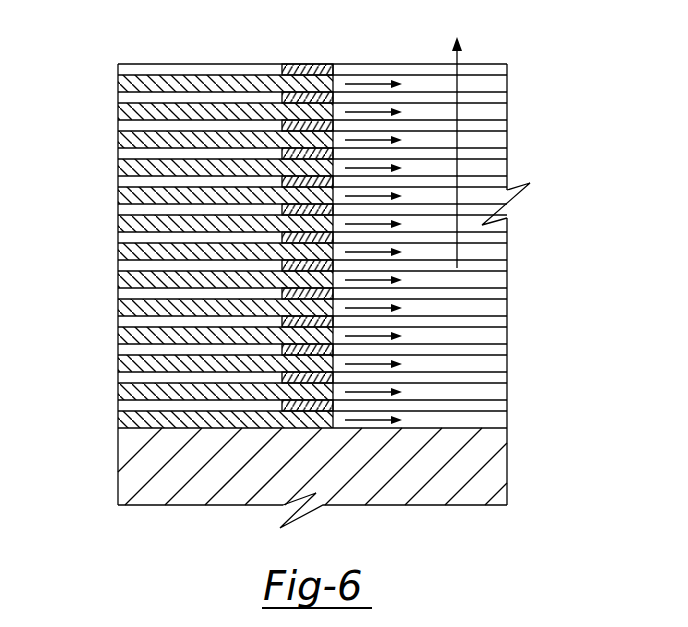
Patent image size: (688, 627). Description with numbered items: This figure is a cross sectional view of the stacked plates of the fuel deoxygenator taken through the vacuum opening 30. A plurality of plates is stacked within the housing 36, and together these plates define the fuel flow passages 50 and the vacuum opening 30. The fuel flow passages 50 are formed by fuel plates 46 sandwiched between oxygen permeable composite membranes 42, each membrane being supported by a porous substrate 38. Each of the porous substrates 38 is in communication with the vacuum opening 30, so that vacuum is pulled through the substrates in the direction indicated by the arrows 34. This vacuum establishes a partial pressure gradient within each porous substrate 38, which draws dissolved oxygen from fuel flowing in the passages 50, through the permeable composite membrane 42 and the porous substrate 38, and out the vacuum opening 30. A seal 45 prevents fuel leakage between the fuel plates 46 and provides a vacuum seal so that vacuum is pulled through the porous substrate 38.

The vacuum opening 30 is at (425, 42).
The arrows 34 is at (364, 78).
The housing 36 is at (422, 481).
The porous substrate 38 is at (120, 223).
The oxygen permeable composite membrane 42 is at (172, 412).
The seal 45 is at (298, 398).
The fuel plate 46 is at (120, 406).
The fuel flow passages 50 is at (110, 268).